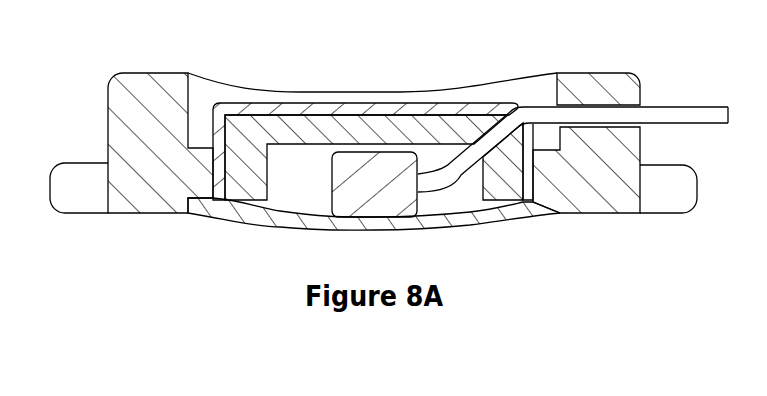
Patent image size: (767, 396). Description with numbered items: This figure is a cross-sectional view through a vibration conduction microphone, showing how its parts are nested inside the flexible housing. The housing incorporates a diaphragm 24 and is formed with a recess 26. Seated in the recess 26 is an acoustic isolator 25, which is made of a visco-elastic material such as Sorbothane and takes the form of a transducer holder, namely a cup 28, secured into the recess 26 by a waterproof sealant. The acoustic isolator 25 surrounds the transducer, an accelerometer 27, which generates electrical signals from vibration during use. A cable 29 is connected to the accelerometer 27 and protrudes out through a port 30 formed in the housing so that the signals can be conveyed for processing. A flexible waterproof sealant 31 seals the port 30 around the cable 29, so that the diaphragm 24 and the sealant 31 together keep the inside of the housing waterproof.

The diaphragm 24 is at (452, 223).
The acoustic isolator 25 is at (430, 130).
The recess 26 is at (203, 97).
The accelerometer 27 is at (355, 203).
The cup 28 is at (288, 107).
The cable 29 is at (680, 113).
The port 30 is at (593, 103).
The flexible waterproof sealant 31 is at (640, 127).